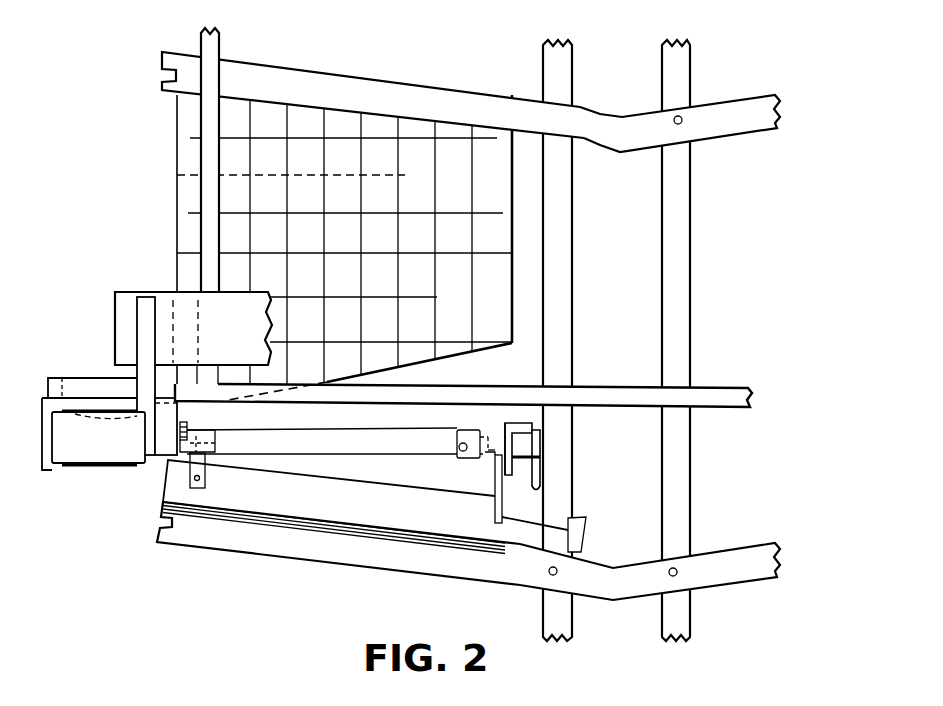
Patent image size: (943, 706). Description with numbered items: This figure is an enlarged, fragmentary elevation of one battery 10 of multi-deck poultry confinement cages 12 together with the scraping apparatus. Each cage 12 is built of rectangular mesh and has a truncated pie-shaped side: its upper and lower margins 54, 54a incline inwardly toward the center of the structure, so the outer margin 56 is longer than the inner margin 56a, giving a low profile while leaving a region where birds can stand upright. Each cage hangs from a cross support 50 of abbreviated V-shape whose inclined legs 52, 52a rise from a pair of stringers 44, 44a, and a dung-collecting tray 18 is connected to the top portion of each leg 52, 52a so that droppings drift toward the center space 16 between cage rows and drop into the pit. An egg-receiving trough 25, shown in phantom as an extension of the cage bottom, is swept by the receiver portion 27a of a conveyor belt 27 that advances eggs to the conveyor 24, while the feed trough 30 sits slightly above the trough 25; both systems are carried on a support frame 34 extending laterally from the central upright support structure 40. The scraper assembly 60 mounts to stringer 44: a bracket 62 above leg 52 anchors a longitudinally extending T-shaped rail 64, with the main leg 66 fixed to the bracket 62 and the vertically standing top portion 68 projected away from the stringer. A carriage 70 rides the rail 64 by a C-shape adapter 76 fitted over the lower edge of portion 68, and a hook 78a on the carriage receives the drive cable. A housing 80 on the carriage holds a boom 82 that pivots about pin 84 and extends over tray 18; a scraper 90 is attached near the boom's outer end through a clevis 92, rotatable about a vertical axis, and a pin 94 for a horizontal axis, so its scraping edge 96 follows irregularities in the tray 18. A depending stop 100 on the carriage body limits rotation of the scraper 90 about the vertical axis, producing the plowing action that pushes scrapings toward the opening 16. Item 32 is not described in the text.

The battery 10 is at (325, 57).
The poultry confinement cage 12 is at (160, 120).
The space between cage rows 16 is at (616, 619).
The dung-collecting tray 18 is at (160, 505).
The conveyor 24 is at (83, 455).
The egg-receiving trough 25 is at (72, 387).
The conveyor belt 27 is at (119, 468).
The receiver portion of conveyor belt 27a is at (92, 410).
The feed trough 30 is at (130, 362).
The panel 32 is at (223, 331).
The support frame 34 is at (722, 388).
The central upright support structure 40 is at (724, 249).
The stringer 44 is at (567, 65).
The stringer 44a is at (686, 68).
The cross support 50 is at (764, 128).
The inclined leg of cross support 52 is at (395, 92).
The inclined leg of cross support 52a is at (754, 100).
The upper margin of cage 54 is at (493, 68).
The lower margin of cage 54a is at (438, 353).
The outer margin of cage 56 is at (176, 225).
The inner margin of cage 56a is at (513, 226).
The scraper assembly 60 is at (229, 552).
The bracket 62 is at (541, 443).
The rail 64 is at (527, 474).
The main leg of T-rail 66 is at (541, 457).
The top portion of T-rail 68 is at (504, 428).
The carriage 70 is at (518, 416).
The C-shape adapter 76 is at (500, 482).
The hook 78a is at (525, 425).
The housing 80 is at (478, 432).
The boom 82 is at (401, 440).
The pin 84 is at (463, 451).
The scraper 90 is at (403, 509).
The clevis 92 is at (205, 470).
The pin 94 is at (200, 488).
The scraping edge 96 is at (338, 520).
The depending stop 100 is at (586, 528).